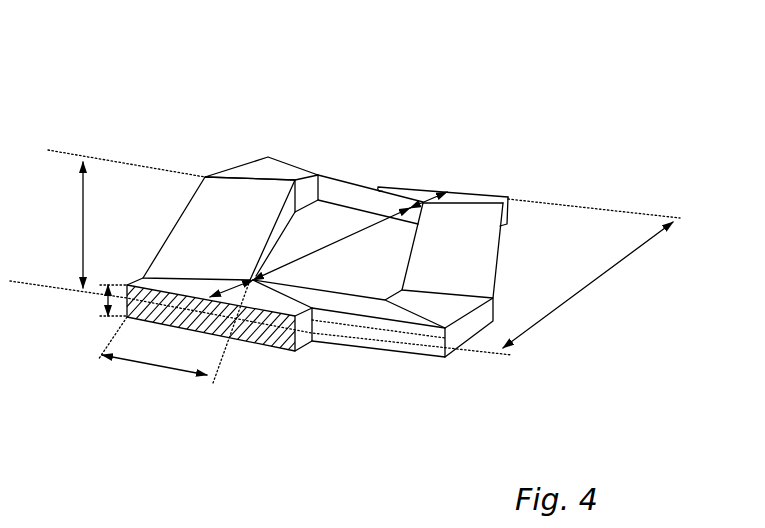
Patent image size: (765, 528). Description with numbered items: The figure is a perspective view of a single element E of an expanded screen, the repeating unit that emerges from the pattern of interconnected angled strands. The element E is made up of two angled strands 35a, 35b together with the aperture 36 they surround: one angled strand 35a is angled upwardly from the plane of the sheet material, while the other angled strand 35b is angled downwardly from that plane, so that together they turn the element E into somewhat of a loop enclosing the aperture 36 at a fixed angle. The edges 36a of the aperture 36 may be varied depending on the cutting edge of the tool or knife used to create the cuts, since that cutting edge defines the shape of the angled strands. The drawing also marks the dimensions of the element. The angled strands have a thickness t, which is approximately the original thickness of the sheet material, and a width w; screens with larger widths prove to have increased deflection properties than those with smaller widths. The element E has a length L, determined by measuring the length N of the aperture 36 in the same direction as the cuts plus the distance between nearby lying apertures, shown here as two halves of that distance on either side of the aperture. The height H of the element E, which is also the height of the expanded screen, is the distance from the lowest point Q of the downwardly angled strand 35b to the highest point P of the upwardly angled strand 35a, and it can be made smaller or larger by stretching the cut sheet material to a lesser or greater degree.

The angled strand 35a is at (265, 193).
The angled strand 35b is at (450, 304).
The aperture 36 is at (368, 265).
The edge of aperture 36a is at (357, 193).
The highest point of angled strand P is at (205, 177).
The element E is at (217, 136).
The lowest point of angled strand Q is at (446, 358).
The length of aperture N is at (331, 244).
The height H is at (65, 225).
The thickness t is at (106, 297).
The width w is at (154, 358).
The length L is at (588, 285).